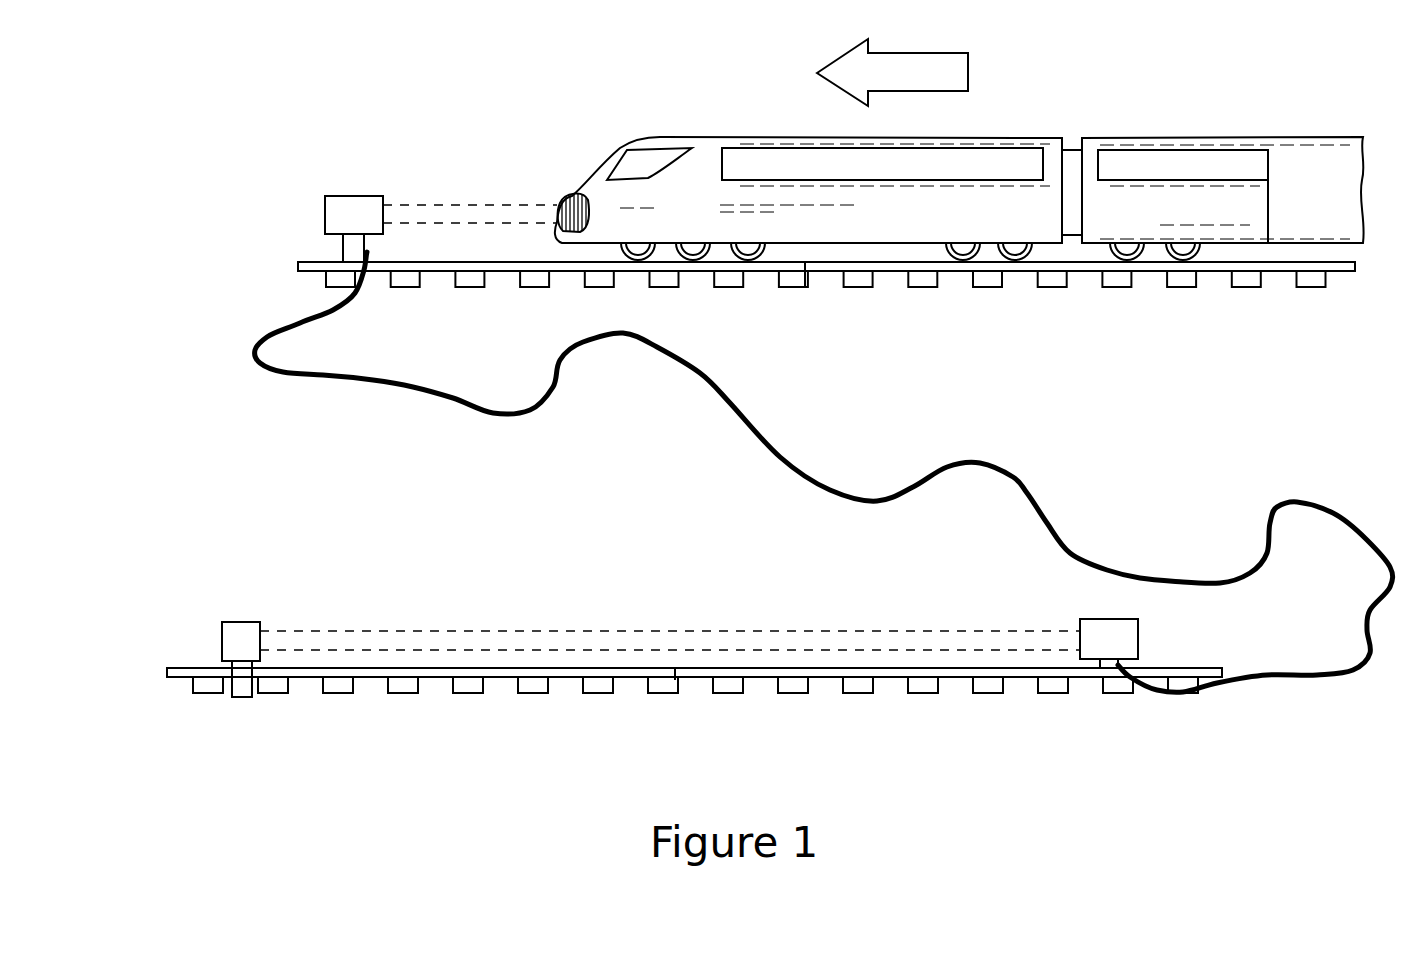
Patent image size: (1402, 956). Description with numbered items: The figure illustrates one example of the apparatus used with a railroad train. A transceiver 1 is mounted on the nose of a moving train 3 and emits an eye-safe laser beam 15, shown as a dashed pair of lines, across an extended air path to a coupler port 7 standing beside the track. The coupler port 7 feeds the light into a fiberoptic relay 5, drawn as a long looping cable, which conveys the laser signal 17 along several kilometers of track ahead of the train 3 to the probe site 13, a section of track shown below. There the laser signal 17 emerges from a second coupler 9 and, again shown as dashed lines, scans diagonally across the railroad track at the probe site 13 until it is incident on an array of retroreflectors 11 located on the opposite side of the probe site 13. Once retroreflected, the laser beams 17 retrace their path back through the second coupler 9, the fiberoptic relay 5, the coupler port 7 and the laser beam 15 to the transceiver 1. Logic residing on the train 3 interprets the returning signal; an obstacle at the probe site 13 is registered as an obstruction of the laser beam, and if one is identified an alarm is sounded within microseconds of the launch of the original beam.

The transceiver 1 is at (572, 190).
The train 3 is at (959, 175).
The fiberoptic relay 5 is at (824, 472).
The coupler port 7 is at (354, 210).
The second coupler 9 is at (1129, 643).
The retroreflectors 11 is at (241, 638).
The probe site 13 is at (694, 702).
The laser beam 15 is at (470, 191).
The laser signal 17 is at (670, 620).